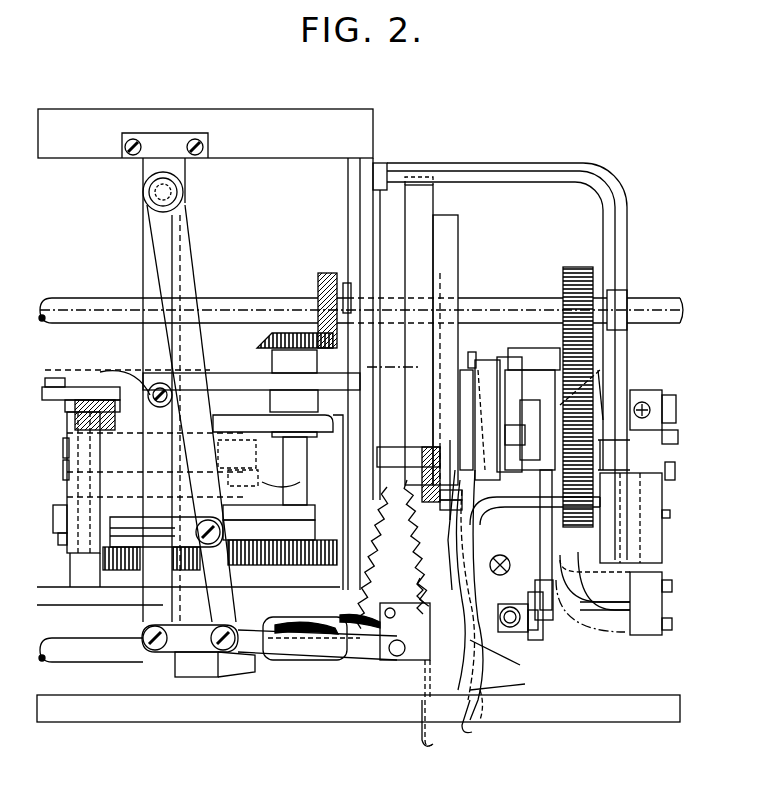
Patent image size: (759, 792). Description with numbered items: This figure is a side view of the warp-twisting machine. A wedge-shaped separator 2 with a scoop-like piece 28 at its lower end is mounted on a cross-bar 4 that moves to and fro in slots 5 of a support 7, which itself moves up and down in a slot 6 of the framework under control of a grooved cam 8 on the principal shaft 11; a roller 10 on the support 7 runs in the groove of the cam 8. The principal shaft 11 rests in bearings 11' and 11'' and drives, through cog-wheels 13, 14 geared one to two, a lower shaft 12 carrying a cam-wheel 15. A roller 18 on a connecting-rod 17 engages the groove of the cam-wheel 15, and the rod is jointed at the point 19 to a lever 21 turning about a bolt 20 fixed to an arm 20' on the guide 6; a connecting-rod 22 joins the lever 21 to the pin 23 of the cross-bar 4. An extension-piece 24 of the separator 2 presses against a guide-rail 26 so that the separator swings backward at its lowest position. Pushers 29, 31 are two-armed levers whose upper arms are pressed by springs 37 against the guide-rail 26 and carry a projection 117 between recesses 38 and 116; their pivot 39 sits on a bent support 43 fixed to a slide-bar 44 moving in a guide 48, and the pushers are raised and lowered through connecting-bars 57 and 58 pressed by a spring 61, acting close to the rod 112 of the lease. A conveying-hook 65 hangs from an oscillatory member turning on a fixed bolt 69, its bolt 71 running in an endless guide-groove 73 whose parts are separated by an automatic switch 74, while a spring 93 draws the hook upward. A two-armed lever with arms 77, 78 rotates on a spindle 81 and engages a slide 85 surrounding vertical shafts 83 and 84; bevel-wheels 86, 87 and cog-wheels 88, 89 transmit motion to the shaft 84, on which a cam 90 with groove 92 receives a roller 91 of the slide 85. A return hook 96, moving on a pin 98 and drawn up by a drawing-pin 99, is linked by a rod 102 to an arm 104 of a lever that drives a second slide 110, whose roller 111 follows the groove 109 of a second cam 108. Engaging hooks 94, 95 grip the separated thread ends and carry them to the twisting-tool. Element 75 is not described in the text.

The separator 2 is at (485, 655).
The cross-bar 4 is at (526, 631).
The slots 5 is at (512, 606).
The slot 6 is at (436, 480).
The support 7 is at (478, 395).
The grooved cam 8 is at (452, 243).
The roller 10 is at (463, 370).
The principal shaft 11 is at (361, 301).
The bearing 11' is at (631, 295).
The bearing 11'' is at (335, 276).
The shaft 12 is at (455, 452).
The cog-wheel 13 is at (595, 372).
The cog-wheel 14 is at (572, 266).
The cam-wheel 15 is at (508, 356).
The connecting-rod 17 is at (530, 427).
The roller 18 is at (515, 445).
The joint 19 is at (611, 373).
The bolt 20 is at (534, 348).
The arm 20' is at (480, 347).
The lever 21 is at (545, 392).
The connecting-rod 22 is at (545, 588).
The pin 23 is at (542, 622).
The extension-piece 24 is at (443, 530).
The guide-rail 26 is at (425, 500).
The scoop-like piece 28 is at (475, 735).
The pusher 29 is at (501, 656).
The pusher 31 is at (509, 681).
The spring 37 is at (453, 590).
The recess 38 is at (510, 500).
The pivot 39 is at (508, 565).
The bent support 43 is at (605, 605).
The slide-bar 44 is at (662, 565).
The guide 48 is at (662, 522).
The connecting-bar 57 is at (633, 390).
The connecting-bar 58 is at (668, 398).
The spring 61 is at (650, 405).
The conveying-hook 65 is at (255, 660).
The bolt 69 is at (175, 194).
The bolt 71 is at (397, 660).
The guide-groove 73 is at (376, 616).
The automatic switch 74 is at (410, 608).
The arm 75 is at (185, 525).
The longer arm 77 is at (103, 553).
The arm 78 is at (58, 538).
The spindle 81 is at (95, 388).
The vertical shaft 83 is at (307, 462).
The vertical shaft 84 is at (162, 382).
The slide 85 is at (315, 512).
The bevel-wheel 86 is at (320, 286).
The bevel-wheel 87 is at (260, 341).
The cog-wheel 88 is at (281, 530).
The cog-wheel 89 is at (244, 540).
The cam 90 is at (63, 478).
The roller 91 is at (236, 480).
The groove 92 is at (281, 472).
The spring 93 is at (418, 578).
The engaging hook 94 is at (430, 752).
The engaging hook 95 is at (447, 717).
The hook for bringing back the threads 96 is at (250, 612).
The pin 98 is at (295, 612).
The drawing-pin 99 is at (365, 534).
The rod 102 is at (132, 388).
The arm 104 is at (75, 412).
The second cam 108 is at (63, 458).
The groove 109 is at (228, 447).
The slide 110 is at (328, 428).
The roller 111 is at (67, 447).
The rod 112 is at (358, 708).
The recess 116 is at (451, 493).
The projection 117 is at (451, 508).